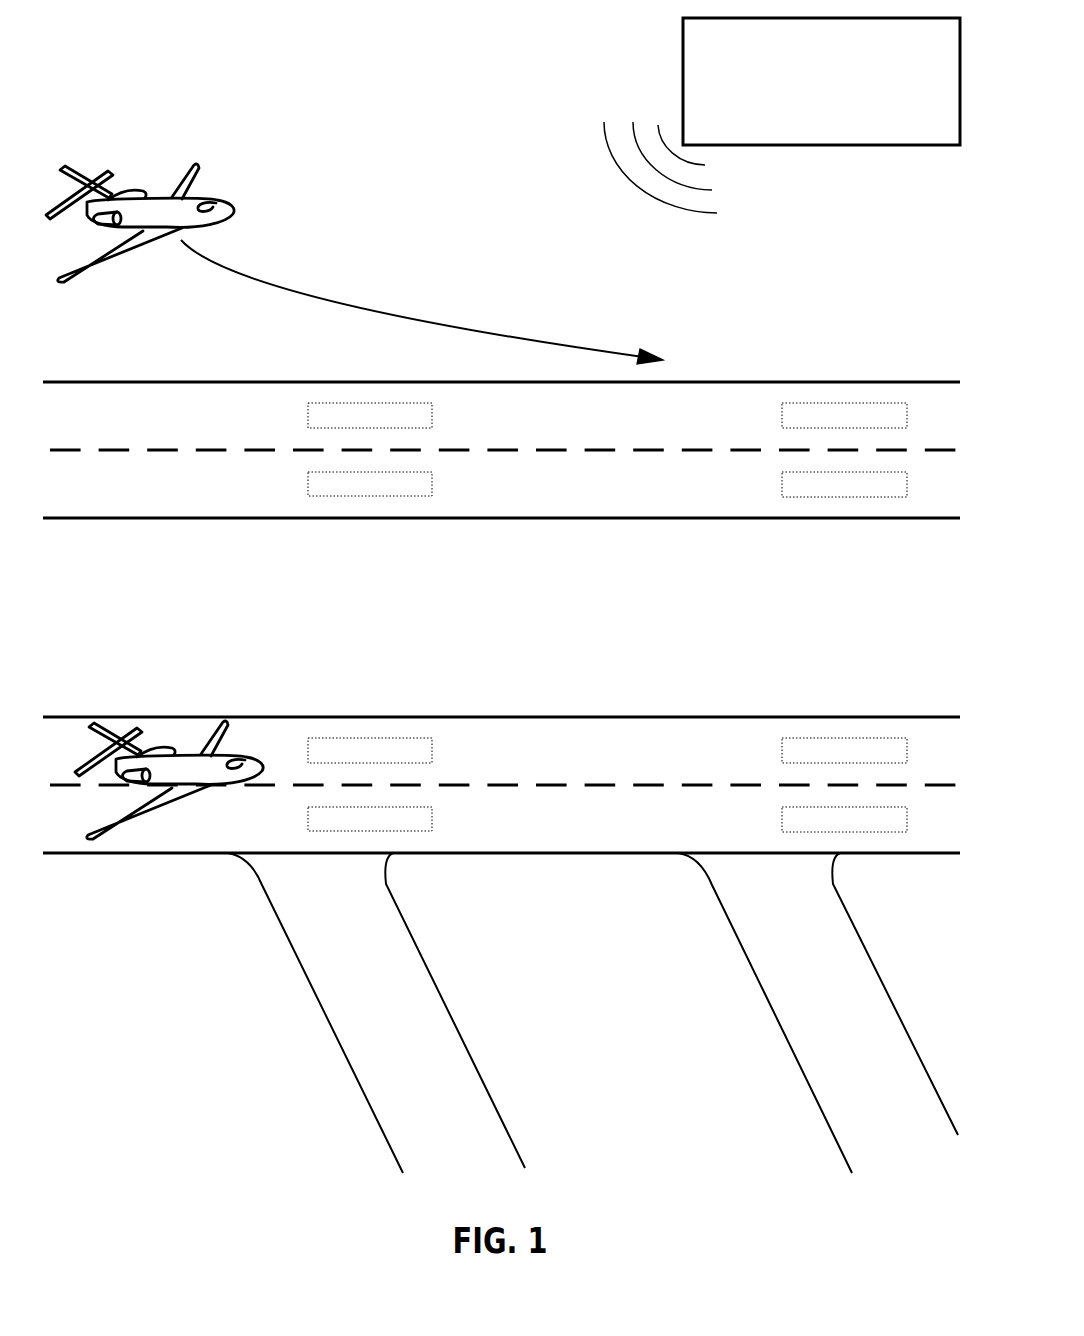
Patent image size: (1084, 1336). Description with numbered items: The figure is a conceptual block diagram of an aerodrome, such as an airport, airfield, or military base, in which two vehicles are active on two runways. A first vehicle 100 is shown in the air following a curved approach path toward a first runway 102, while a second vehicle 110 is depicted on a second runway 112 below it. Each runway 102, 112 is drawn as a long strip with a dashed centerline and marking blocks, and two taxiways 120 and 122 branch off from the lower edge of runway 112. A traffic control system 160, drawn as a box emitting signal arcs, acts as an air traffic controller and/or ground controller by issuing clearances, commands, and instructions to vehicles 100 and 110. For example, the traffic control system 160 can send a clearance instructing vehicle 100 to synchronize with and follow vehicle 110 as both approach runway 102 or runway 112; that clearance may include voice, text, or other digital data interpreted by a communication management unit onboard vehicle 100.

The vehicle 100 is at (210, 127).
The runway 102 is at (610, 518).
The vehicle 110 is at (153, 881).
The runway 112 is at (612, 717).
The taxiway 120 is at (475, 1058).
The taxiway 122 is at (723, 912).
The traffic control system 160 is at (802, 121).